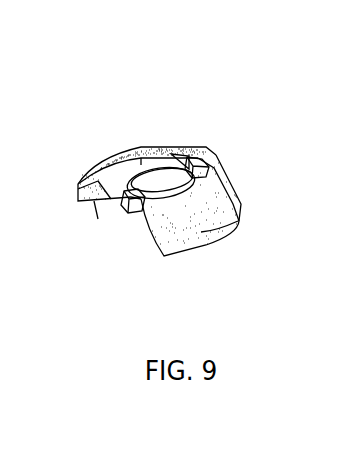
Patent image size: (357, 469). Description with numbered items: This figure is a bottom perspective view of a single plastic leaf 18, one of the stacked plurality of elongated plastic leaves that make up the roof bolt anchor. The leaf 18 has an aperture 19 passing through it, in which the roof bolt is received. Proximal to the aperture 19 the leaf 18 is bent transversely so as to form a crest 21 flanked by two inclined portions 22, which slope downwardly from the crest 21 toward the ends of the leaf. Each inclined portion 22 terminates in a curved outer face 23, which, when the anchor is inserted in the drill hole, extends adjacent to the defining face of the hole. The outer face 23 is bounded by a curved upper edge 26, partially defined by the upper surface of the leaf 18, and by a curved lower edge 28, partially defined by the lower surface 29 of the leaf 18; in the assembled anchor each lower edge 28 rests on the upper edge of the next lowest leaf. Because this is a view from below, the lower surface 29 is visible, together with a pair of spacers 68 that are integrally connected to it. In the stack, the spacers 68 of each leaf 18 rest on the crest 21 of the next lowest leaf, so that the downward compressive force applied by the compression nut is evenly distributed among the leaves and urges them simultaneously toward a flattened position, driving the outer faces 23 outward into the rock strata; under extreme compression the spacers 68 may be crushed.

The plastic leaf 18 is at (165, 70).
The aperture 19 is at (150, 230).
The crest 21 is at (208, 138).
The inclined portions 22 is at (157, 136).
The curved outer face 23 is at (86, 177).
The curved upper edge 26 is at (110, 156).
The curved lower edge 28 is at (92, 203).
The lower surface 29 is at (123, 166).
The spacers 68 is at (212, 180).